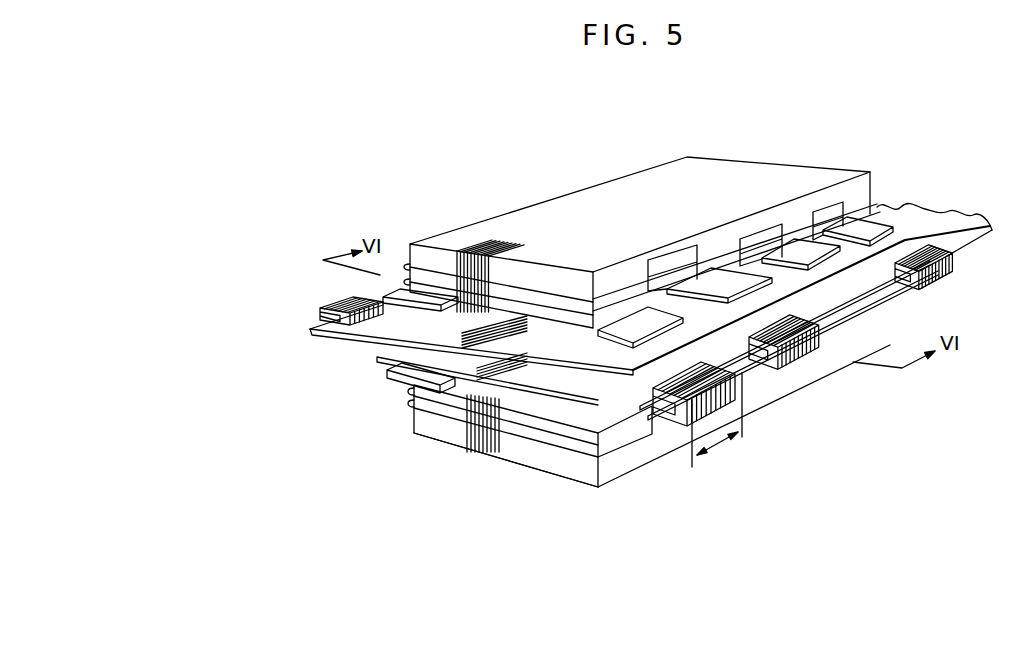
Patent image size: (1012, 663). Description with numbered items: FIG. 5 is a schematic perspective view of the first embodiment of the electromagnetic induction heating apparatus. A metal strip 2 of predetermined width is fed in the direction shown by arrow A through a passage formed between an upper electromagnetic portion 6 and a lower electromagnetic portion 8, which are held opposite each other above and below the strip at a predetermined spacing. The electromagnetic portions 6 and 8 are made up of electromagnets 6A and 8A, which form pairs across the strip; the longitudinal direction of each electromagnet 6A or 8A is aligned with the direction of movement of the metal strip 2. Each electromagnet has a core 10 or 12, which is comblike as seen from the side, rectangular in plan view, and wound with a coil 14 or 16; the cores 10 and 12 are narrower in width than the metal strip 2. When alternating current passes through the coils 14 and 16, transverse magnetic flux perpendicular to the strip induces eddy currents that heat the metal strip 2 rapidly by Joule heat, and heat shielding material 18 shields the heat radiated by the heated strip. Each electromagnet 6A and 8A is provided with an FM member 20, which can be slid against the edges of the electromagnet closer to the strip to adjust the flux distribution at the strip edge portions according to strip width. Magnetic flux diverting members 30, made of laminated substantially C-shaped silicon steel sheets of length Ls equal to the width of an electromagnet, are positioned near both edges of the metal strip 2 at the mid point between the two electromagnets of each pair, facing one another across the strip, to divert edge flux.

The metal strip 2 is at (367, 341).
The electromagnetic portion 6 is at (580, 174).
The electromagnet 6A is at (622, 290).
The electromagnetic portion 8 is at (538, 493).
The electromagnet 8A is at (620, 457).
The core 10 is at (716, 166).
The core 12 is at (578, 472).
The coil 14 is at (440, 275).
The coil 16 is at (535, 440).
The heat shielding material 18 is at (540, 337).
The FM member 20 is at (393, 290).
The magnetic flux diverting member 30 is at (335, 302).
The direction of strip movement A is at (438, 395).
The length of magnetic flux diverting member Ls is at (720, 443).